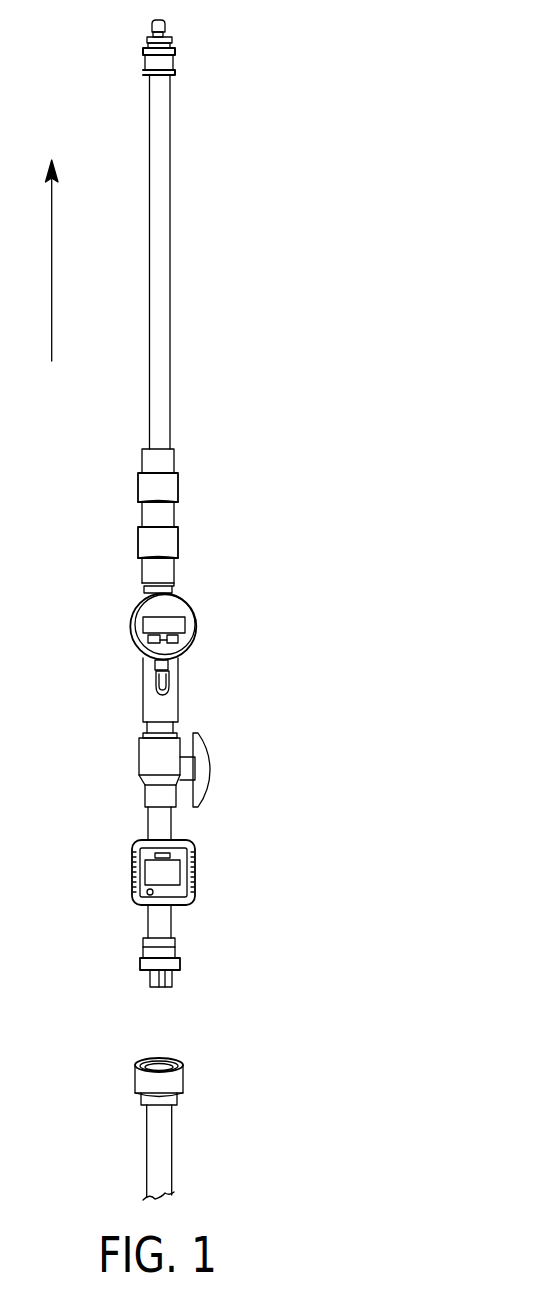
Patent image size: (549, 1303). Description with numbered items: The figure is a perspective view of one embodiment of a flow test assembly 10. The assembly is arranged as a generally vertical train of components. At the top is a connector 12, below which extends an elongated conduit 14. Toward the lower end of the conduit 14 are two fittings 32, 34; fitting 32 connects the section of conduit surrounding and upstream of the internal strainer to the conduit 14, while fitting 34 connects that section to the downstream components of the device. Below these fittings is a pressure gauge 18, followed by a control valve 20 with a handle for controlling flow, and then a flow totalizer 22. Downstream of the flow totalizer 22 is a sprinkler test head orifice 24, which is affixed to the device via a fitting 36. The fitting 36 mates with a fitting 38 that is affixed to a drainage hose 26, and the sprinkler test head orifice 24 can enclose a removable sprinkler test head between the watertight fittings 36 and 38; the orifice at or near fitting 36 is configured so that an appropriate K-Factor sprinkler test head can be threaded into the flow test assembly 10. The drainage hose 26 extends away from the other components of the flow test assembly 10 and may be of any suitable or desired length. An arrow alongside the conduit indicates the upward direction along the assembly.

The flow test assembly 10 is at (405, 107).
The connector 12 is at (161, 17).
The conduit 14 is at (165, 250).
The pressure gauge 18 is at (207, 603).
The control valve 20 is at (217, 737).
The flow totalizer 22 is at (203, 857).
The sprinkler test head orifice 24 is at (172, 983).
The drainage hose 26 is at (172, 1142).
The fitting 32 is at (170, 488).
The fitting 34 is at (172, 542).
The fitting 36 is at (182, 962).
The fitting 38 is at (183, 1073).